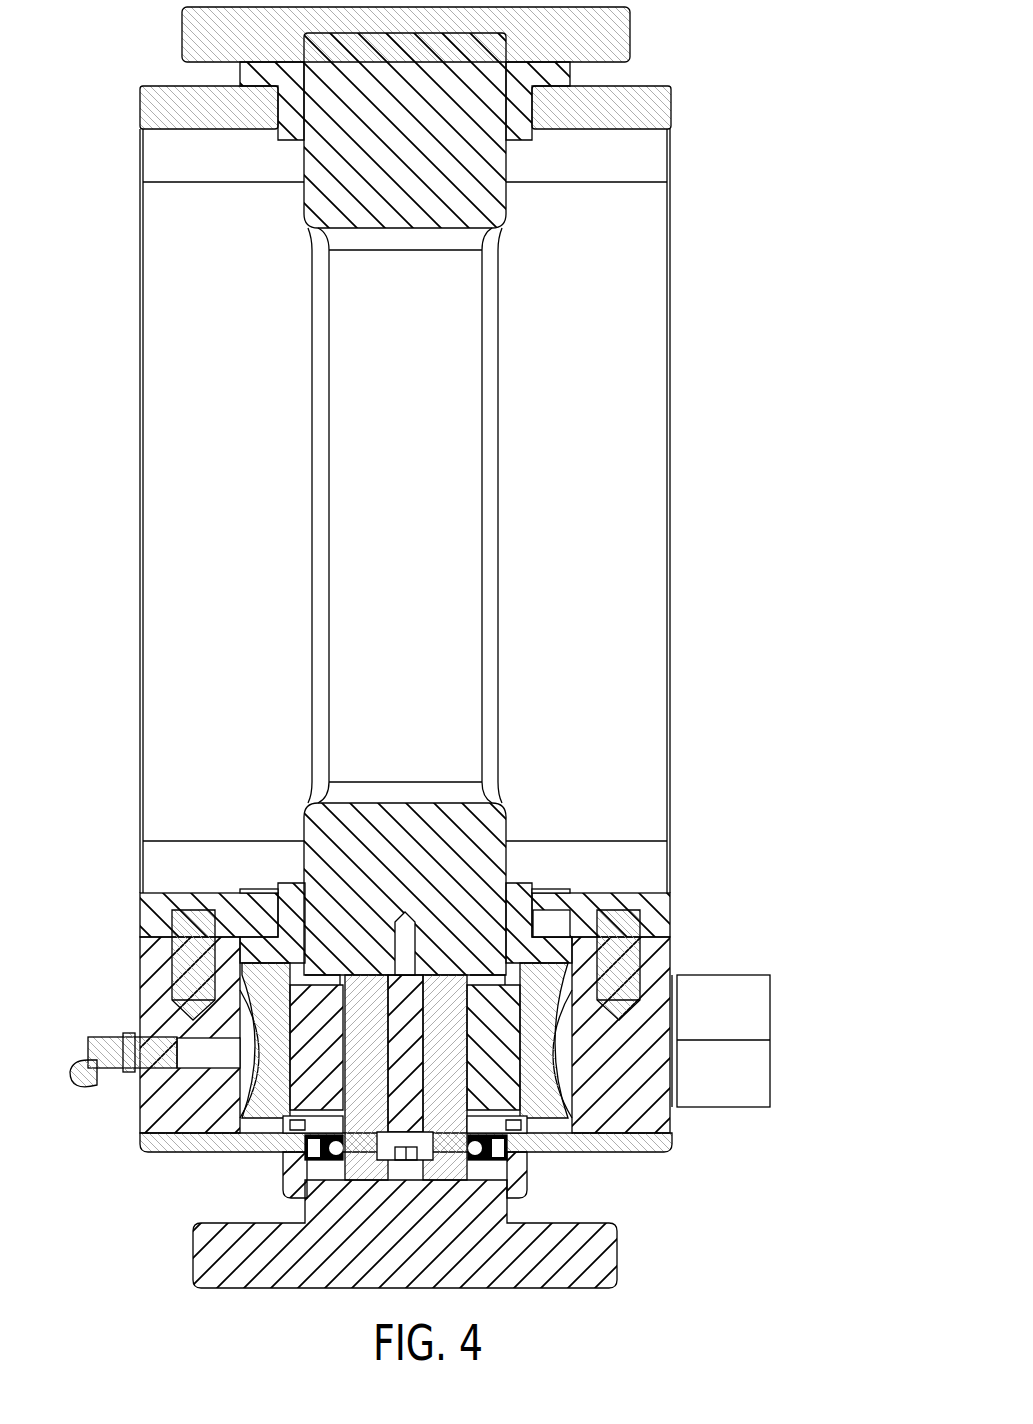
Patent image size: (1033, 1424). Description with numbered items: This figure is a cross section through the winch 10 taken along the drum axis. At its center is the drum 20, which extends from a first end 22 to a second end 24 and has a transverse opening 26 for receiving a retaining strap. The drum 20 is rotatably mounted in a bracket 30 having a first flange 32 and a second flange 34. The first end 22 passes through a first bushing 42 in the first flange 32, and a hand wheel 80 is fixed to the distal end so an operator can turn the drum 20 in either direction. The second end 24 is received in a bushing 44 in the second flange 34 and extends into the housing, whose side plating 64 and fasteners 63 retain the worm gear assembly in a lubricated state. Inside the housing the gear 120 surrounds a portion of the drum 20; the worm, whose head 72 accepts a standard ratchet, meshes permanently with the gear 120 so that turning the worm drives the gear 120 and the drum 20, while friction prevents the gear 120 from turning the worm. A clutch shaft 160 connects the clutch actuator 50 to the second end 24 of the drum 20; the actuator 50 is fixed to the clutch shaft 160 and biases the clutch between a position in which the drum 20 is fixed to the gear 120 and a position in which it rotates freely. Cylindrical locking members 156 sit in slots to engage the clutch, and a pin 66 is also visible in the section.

The winch 10 is at (797, 120).
The drum 20 is at (503, 456).
The first end 22 is at (500, 176).
The second end 24 is at (493, 880).
The transverse opening 26 is at (337, 712).
The bracket 30 is at (650, 516).
The first flange 32 is at (672, 106).
The second flange 34 is at (665, 913).
The first bushing 42 is at (297, 133).
The bushing 44 is at (523, 905).
The clutch actuator 50 is at (607, 1262).
The fasteners 63 is at (207, 1141).
The side plating 64 is at (148, 1108).
The locking pin 66 is at (98, 1034).
The head 72 is at (745, 993).
The hand wheel 80 is at (630, 33).
The gear 120 is at (265, 1106).
The locking members 156 is at (315, 1106).
The clutch shaft 160 is at (370, 1177).